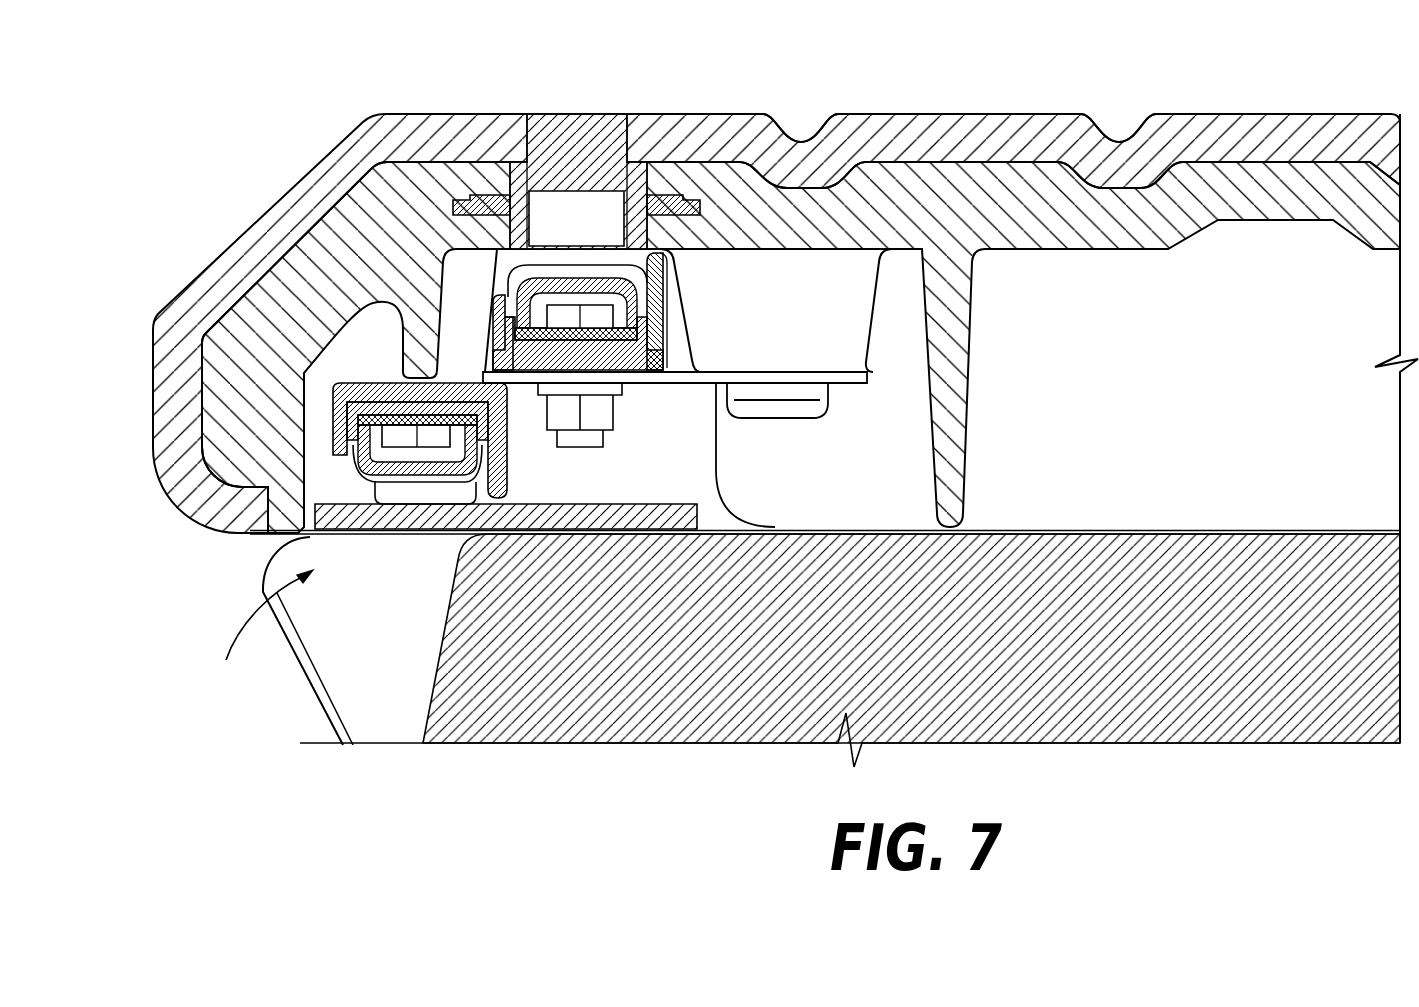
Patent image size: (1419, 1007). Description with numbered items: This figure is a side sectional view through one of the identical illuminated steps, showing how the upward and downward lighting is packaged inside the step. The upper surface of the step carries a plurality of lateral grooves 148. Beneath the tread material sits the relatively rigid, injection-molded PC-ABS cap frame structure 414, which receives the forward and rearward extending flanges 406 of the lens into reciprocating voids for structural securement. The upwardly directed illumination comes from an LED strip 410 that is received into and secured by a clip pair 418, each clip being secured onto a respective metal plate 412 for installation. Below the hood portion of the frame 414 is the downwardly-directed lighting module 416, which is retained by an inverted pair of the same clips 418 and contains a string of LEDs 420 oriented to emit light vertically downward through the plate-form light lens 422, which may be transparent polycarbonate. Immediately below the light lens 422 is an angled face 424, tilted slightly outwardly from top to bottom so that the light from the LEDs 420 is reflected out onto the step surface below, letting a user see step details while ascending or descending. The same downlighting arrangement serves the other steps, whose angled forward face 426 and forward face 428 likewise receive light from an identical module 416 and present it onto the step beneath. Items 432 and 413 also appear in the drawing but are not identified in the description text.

The outer shell 432 is at (332, 172).
The cap frame structure 414 is at (944, 224).
The lateral grooves 148 is at (808, 127).
The clip pair 418 is at (586, 130).
The flange 406 is at (465, 200).
The downwardly-directed lighting module 416 is at (553, 202).
The LED strip 410 is at (600, 313).
The metal plate 412 is at (691, 383).
The bracket 413 is at (530, 358).
The LEDs 420 is at (397, 437).
The light lens 422 is at (432, 518).
The angled face 424 is at (370, 690).
The angled forward face 426 is at (192, 478).
The forward face 428 is at (257, 631).